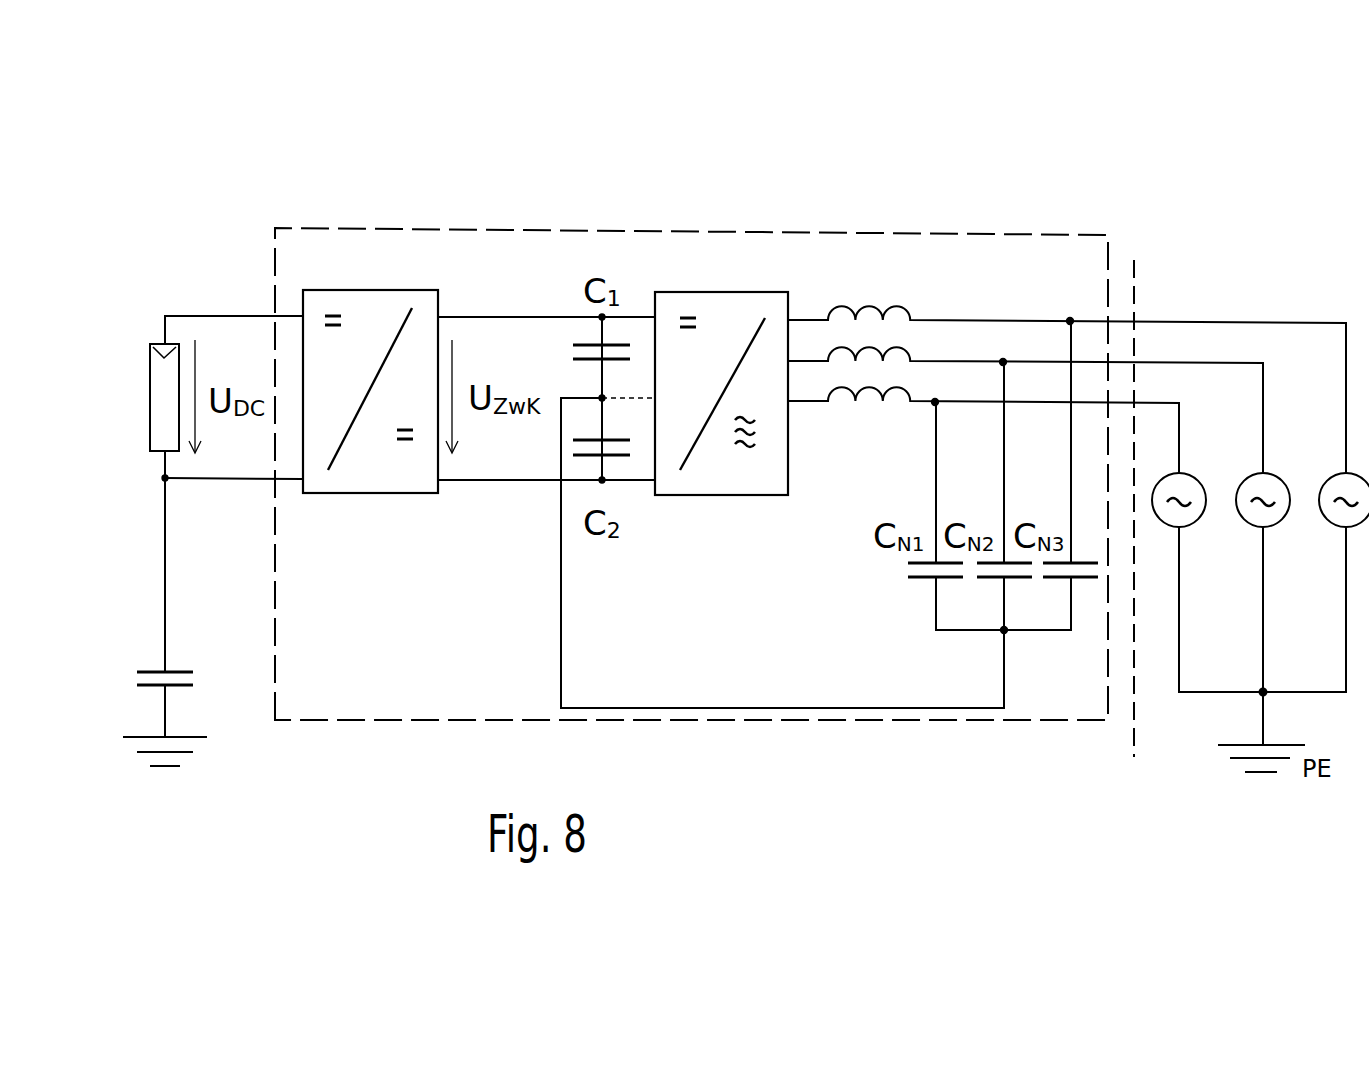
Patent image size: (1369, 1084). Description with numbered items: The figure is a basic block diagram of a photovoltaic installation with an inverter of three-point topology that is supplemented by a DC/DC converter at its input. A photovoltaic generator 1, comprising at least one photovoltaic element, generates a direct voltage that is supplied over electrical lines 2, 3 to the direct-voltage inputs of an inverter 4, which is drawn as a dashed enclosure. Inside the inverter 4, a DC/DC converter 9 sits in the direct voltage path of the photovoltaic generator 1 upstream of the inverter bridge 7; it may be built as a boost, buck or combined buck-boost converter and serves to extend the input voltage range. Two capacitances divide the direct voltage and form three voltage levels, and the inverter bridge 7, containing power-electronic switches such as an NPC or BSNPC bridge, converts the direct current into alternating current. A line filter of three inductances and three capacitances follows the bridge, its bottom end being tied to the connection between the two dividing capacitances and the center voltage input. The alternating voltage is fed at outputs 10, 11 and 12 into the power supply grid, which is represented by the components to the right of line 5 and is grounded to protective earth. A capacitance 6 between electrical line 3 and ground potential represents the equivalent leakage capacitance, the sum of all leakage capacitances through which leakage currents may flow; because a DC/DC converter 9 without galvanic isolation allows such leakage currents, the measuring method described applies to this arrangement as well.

The photovoltaic generator 1 is at (150, 402).
The electrical line 2 is at (262, 316).
The electrical line 3 is at (213, 478).
The inverter 4 is at (885, 233).
The line 5 is at (1138, 283).
The capacitance C_X 6 is at (155, 660).
The inverter bridge 7 is at (755, 291).
The DC/DC converter 9 is at (400, 290).
The output 10 is at (1120, 323).
The output 11 is at (1120, 363).
The output 12 is at (1120, 403).